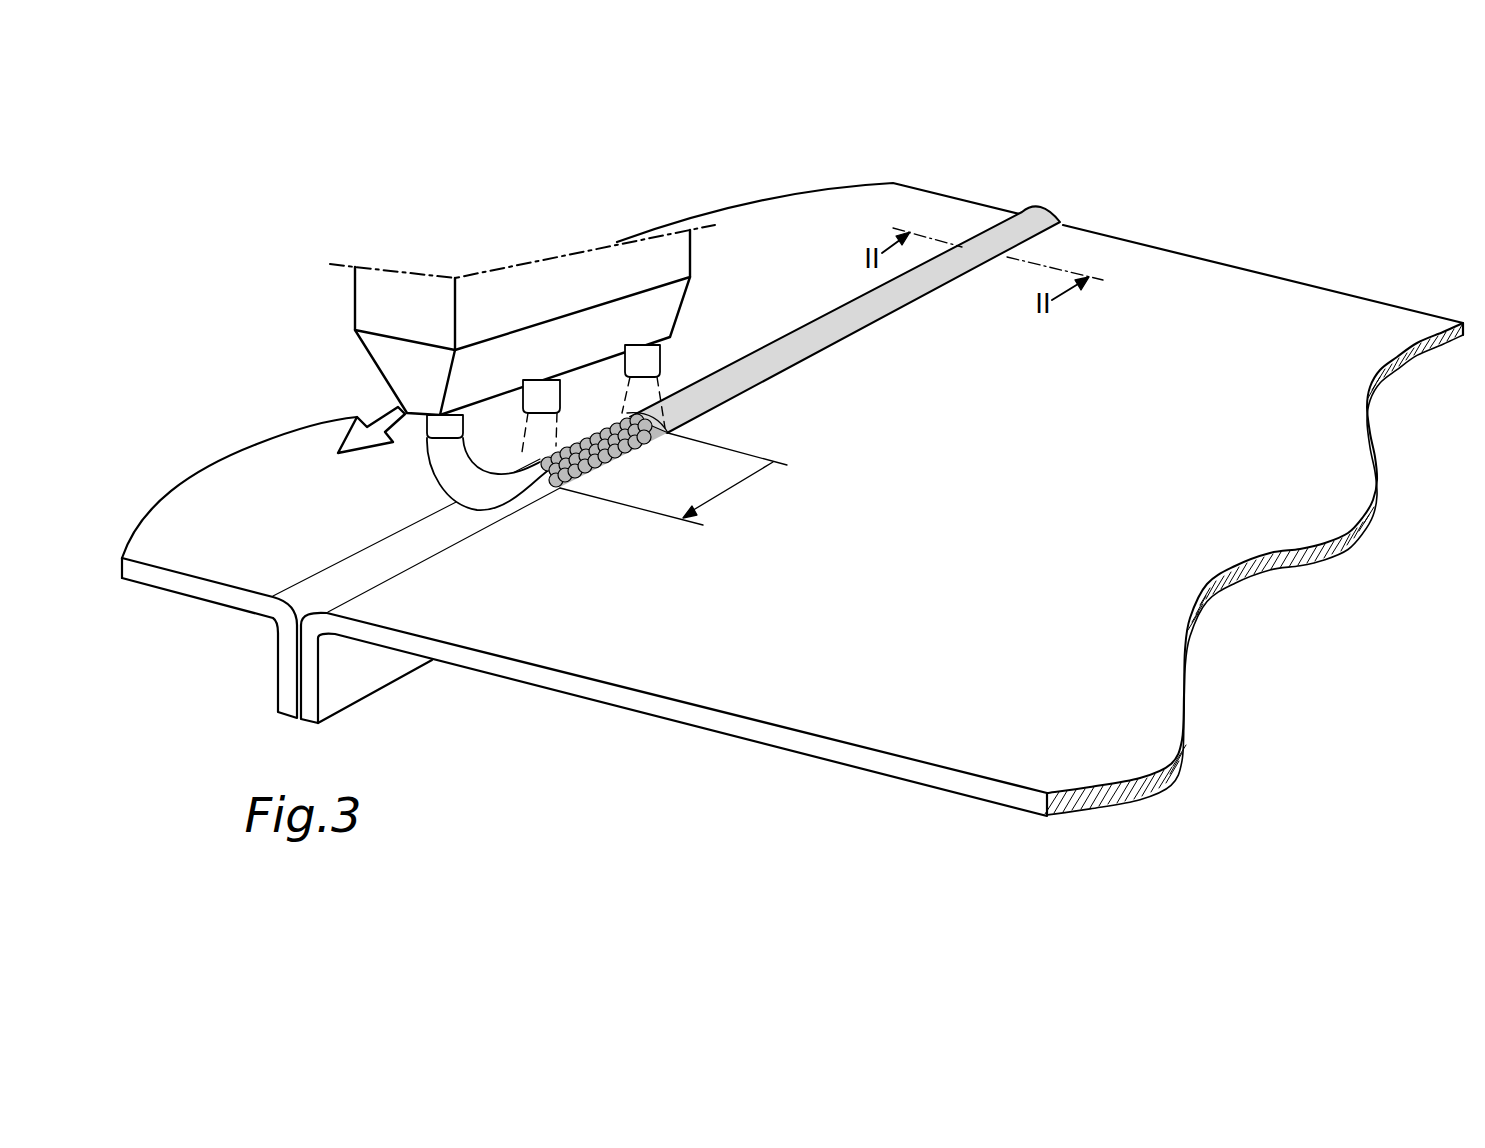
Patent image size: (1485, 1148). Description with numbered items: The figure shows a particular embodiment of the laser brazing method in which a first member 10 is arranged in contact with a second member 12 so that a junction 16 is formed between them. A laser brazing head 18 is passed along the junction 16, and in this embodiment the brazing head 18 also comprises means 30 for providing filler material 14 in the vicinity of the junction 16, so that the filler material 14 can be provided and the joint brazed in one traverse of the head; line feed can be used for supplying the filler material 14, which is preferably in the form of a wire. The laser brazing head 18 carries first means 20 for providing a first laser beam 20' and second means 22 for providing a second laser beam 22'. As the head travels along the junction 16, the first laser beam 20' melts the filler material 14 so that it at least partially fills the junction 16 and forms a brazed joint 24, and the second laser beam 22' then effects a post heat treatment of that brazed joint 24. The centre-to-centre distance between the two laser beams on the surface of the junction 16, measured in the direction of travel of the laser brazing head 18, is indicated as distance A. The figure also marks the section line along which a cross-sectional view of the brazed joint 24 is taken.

The first member 10 is at (1147, 262).
The second member 12 is at (898, 205).
The filler material 14 is at (510, 488).
The junction 16 is at (413, 550).
The laser brazing head 18 is at (367, 303).
The first means for providing a first laser beam 20 is at (570, 388).
The first laser beam 20' is at (566, 425).
The second means for providing a second laser beam 22 is at (676, 331).
The second laser beam 22' is at (684, 379).
The brazed joint 24 is at (787, 353).
The means for providing filler material 30 is at (450, 418).
The distance A is at (727, 488).